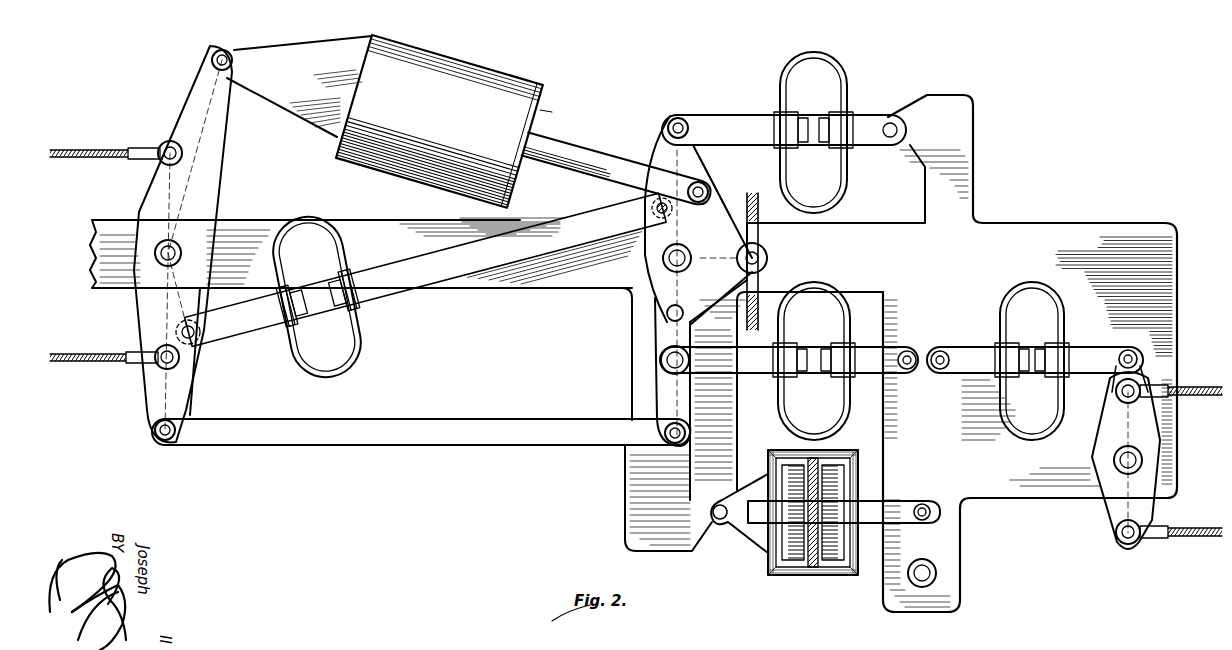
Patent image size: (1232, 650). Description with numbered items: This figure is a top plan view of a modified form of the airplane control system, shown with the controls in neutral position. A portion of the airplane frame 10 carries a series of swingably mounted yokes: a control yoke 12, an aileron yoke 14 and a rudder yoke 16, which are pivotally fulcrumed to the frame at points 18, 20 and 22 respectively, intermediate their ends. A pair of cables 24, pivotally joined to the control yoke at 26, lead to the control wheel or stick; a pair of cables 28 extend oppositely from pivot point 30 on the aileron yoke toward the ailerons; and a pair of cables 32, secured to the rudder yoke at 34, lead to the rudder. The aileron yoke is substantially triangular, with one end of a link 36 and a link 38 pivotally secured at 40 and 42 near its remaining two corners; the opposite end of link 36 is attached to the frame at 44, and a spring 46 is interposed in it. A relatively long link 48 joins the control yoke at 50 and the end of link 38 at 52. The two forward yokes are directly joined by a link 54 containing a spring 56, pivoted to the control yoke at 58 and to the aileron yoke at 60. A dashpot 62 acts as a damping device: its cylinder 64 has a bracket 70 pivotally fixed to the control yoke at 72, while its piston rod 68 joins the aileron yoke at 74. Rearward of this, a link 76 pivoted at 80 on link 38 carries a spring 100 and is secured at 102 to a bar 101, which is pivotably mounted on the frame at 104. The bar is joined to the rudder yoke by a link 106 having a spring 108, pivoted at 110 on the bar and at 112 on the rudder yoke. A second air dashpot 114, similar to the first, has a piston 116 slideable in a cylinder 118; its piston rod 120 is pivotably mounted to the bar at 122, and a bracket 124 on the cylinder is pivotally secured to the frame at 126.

The frame 10 is at (538, 278).
The control yoke 12 is at (175, 235).
The aileron yoke 14 is at (698, 275).
The rudder yoke 16 is at (1126, 460).
The fulcrum point 18 is at (182, 252).
The fulcrum point 20 is at (662, 258).
The fulcrum point 22 is at (1142, 458).
The cables 24 is at (75, 158).
The pivot point 26 is at (158, 146).
The cables 28 is at (758, 200).
The pivot point 30 is at (768, 258).
The cables 32 is at (1192, 385).
The pivot point 34 is at (1116, 398).
The link 36 is at (730, 126).
The link 38 is at (655, 395).
The pivot point 40 is at (682, 118).
The pivot point 42 is at (665, 320).
The pivot point 44 is at (898, 130).
The spring 46 is at (813, 132).
The link 48 is at (342, 444).
The pivot point 50 is at (172, 440).
The pivot point 52 is at (666, 442).
The link 54 is at (380, 286).
The spring 56 is at (317, 297).
The pivot point 58 is at (200, 338).
The pivot point 60 is at (652, 203).
The dashpot 62 is at (439, 121).
The cylinder 64 is at (544, 90).
The piston rod 68 is at (580, 148).
The bracket 70 is at (284, 92).
The pivot point 72 is at (228, 54).
The pivot point 74 is at (708, 190).
The link 76 is at (756, 366).
The pivot point 80 is at (660, 360).
The spring 100 is at (814, 361).
The bar 101 is at (950, 449).
The pivot point 102 is at (905, 350).
The pivot point 104 is at (926, 588).
The link 106 is at (1098, 355).
The spring 108 is at (1032, 361).
The pivot point 110 is at (946, 352).
The pivot point 112 is at (1136, 350).
The dashpot 114 is at (813, 524).
The piston 116 is at (834, 462).
The cylinder 118 is at (770, 570).
The piston rod 120 is at (904, 500).
The pivot point 122 is at (932, 510).
The bracket 124 is at (745, 528).
The pivot point 126 is at (712, 514).